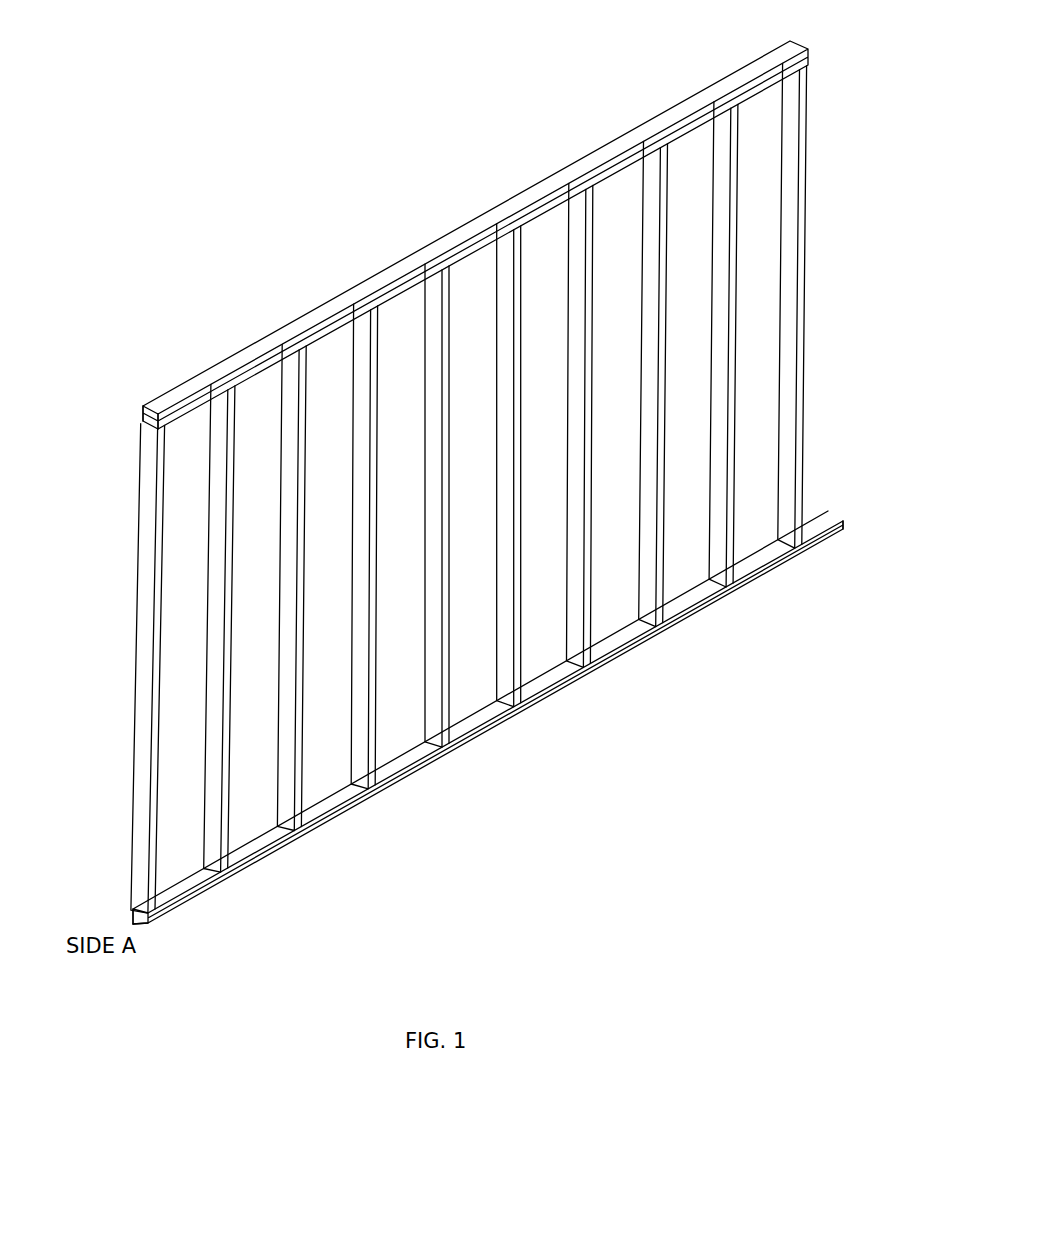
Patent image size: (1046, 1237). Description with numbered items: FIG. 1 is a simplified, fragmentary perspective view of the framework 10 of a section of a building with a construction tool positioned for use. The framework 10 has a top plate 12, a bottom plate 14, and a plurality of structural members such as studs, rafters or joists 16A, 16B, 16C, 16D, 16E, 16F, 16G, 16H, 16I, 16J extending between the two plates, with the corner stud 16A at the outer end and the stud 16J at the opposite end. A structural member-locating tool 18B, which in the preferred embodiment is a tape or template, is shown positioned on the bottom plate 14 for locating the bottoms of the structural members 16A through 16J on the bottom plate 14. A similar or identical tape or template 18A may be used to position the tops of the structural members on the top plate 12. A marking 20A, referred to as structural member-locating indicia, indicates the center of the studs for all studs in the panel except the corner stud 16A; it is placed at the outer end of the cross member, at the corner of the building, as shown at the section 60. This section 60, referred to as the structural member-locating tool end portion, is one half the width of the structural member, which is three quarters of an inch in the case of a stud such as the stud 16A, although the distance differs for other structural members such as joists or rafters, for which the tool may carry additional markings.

The framework 10 is at (864, 167).
The top plate 12 is at (178, 392).
The bottom plate 14 is at (487, 735).
The stud 16A is at (140, 606).
The stud 16B is at (206, 420).
The stud 16C is at (280, 375).
The stud 16D is at (353, 336).
The stud 16E is at (425, 298).
The stud 16F is at (497, 262).
The stud 16G is at (568, 222).
The stud 16H is at (641, 180).
The stud 16I is at (713, 140).
The stud 16J is at (785, 330).
The tape or template 18A is at (160, 426).
The structural member-locating tool 18B is at (758, 584).
The structural member-locating indicia 20A is at (150, 924).
The structural member-locating tool end portion 60 is at (130, 912).